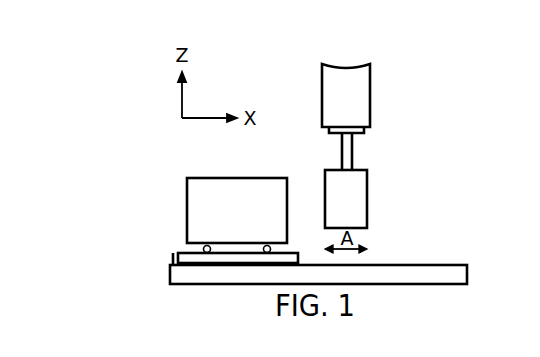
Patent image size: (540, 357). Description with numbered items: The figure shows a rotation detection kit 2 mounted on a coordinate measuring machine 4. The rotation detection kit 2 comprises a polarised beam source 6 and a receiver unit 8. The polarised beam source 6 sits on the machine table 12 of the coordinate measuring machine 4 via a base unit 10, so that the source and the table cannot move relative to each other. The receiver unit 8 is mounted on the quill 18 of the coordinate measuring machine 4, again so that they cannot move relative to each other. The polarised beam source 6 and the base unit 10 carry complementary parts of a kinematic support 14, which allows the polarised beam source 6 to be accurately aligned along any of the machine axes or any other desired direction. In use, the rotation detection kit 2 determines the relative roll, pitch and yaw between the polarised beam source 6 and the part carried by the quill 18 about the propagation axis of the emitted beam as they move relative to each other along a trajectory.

The rotation detection kit 2 is at (291, 132).
The coordinate measuring machine 4 is at (492, 280).
The polarised beam source 6 is at (226, 190).
The receiver unit 8 is at (356, 211).
The base unit 10 is at (175, 258).
The machine table 12 is at (427, 271).
The kinematic support 14 is at (260, 242).
The quill 18 is at (356, 108).